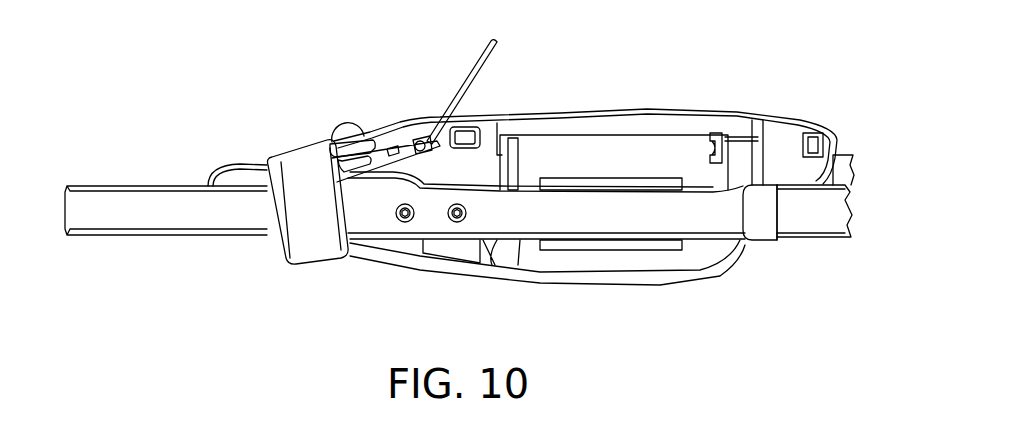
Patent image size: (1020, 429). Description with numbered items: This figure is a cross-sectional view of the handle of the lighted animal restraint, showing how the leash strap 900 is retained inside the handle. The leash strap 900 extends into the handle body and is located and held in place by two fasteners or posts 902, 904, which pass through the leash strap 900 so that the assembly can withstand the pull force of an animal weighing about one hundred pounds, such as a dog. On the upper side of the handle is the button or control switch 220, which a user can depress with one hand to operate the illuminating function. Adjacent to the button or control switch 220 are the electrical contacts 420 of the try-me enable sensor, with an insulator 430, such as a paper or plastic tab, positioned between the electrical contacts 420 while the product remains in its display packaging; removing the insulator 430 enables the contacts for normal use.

The leash strap 900 is at (148, 212).
The fastener or post 902 is at (400, 222).
The fastener or post 904 is at (461, 222).
The button or control switch 220 is at (343, 133).
The electrical contacts 420 is at (402, 138).
The insulator 430 is at (473, 67).